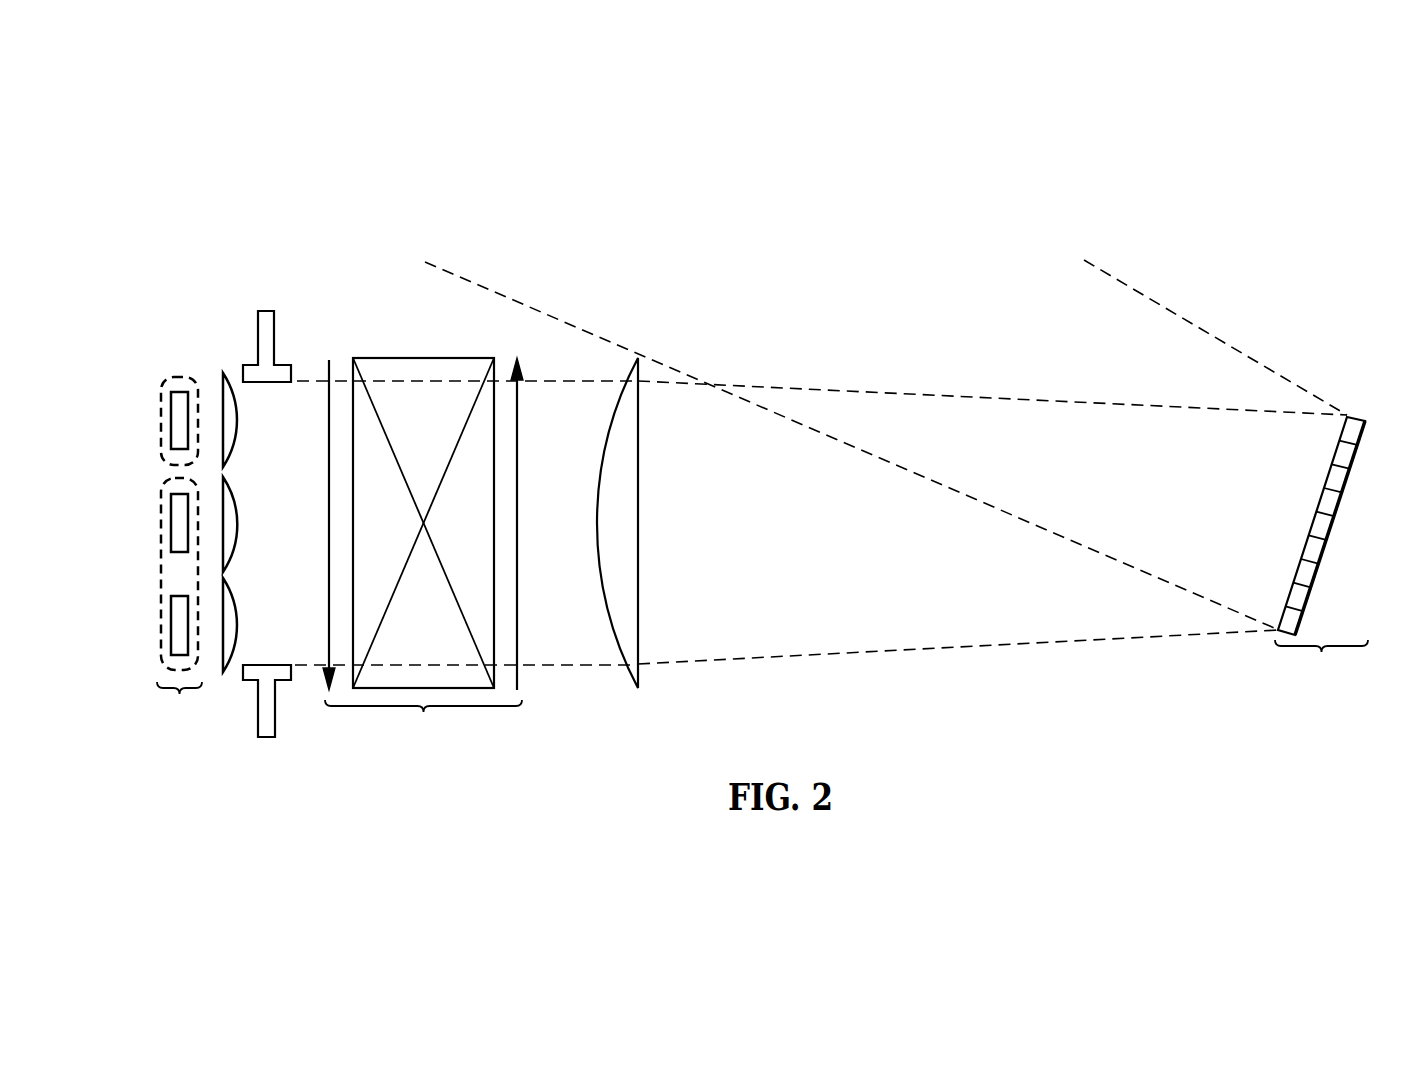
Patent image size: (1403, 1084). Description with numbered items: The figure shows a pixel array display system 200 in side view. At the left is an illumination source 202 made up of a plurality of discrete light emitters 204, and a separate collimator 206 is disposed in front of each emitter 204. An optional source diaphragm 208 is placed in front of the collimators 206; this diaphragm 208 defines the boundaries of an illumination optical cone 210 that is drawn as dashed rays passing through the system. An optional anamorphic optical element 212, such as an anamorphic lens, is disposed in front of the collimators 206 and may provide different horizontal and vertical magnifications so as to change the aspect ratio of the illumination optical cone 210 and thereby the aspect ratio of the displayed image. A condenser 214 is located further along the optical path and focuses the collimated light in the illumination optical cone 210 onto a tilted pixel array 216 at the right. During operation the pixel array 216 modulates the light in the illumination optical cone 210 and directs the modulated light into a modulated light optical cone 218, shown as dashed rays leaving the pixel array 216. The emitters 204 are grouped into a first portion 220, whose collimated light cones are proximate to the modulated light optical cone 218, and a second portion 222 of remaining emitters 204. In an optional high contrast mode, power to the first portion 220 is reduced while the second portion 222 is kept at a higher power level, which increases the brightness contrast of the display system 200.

The display system 200 is at (193, 261).
The illumination source 202 is at (142, 551).
The discrete light emitters 204 is at (171, 420).
The collimator 206 is at (225, 374).
The source diaphragm 208 is at (264, 310).
The illumination optical cone 210 is at (991, 399).
The anamorphic optical element 212 is at (423, 551).
The condenser 214 is at (635, 690).
The pixel array 216 is at (1321, 551).
The modulated light optical cone 218 is at (894, 461).
The first portion of the emitters 220 is at (163, 456).
The second portion of remaining emitters 222 is at (161, 585).